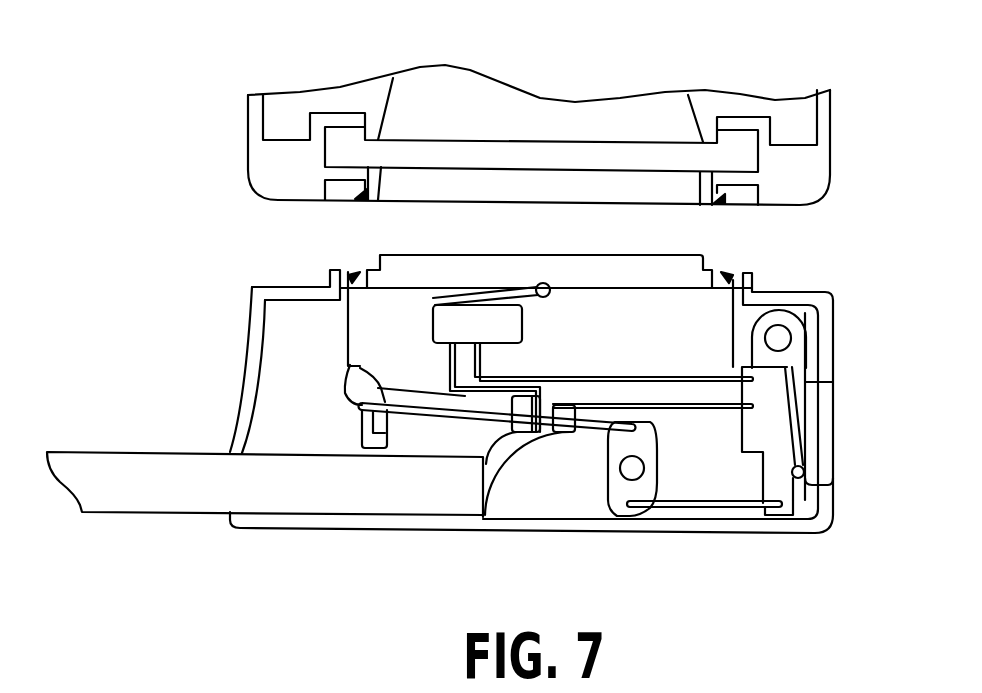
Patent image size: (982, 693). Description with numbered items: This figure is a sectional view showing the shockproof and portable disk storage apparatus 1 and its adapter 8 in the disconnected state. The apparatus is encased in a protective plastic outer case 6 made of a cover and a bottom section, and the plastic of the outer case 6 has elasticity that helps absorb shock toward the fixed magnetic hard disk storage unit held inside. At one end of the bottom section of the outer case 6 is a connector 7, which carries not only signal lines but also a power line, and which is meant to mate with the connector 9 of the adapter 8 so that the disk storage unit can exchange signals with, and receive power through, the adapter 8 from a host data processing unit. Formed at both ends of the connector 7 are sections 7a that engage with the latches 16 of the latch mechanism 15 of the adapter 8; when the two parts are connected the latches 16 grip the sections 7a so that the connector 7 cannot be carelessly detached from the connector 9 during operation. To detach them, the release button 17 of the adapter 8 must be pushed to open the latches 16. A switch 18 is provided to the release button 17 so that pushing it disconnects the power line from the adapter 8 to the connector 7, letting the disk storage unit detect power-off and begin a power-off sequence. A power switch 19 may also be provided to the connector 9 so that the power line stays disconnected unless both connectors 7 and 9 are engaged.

The shockproof and portable disk storage apparatus 1 is at (320, 85).
The outer case 6 is at (247, 178).
The connector 7 is at (590, 196).
The sections 7a is at (365, 197).
The adapter 8 is at (630, 538).
The connector 9 is at (617, 290).
The latch mechanism 15 is at (737, 491).
The latches 16 is at (350, 277).
The release button 17 is at (830, 437).
The switch 18 is at (767, 425).
The power switch 19 is at (520, 325).